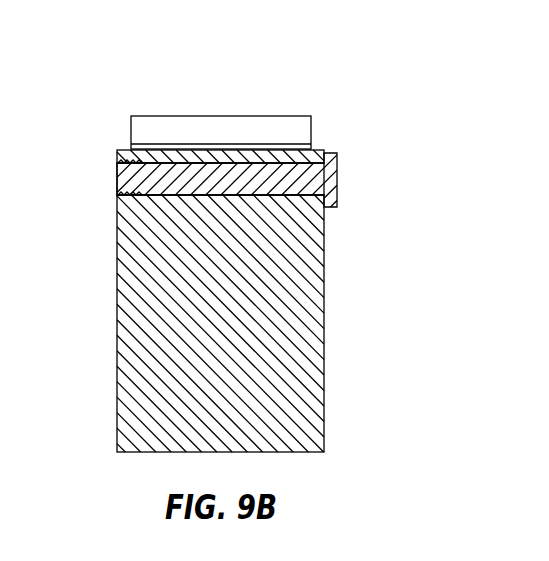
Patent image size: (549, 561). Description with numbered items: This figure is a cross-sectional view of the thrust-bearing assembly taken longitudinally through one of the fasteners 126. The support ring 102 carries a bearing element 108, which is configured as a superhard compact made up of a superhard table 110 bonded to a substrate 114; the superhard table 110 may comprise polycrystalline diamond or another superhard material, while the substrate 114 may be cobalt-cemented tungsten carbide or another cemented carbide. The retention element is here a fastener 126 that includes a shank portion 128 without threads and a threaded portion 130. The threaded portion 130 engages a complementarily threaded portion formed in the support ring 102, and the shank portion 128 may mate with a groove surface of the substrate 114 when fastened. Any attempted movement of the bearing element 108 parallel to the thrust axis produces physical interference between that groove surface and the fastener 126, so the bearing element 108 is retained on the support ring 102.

The support ring 102 is at (300, 292).
The bearing element 108 is at (205, 100).
The superhard table 110 is at (260, 132).
The substrate 114 is at (305, 147).
The fastener 126 is at (337, 178).
The shank portion 128 is at (212, 177).
The threaded portion 130 is at (119, 197).